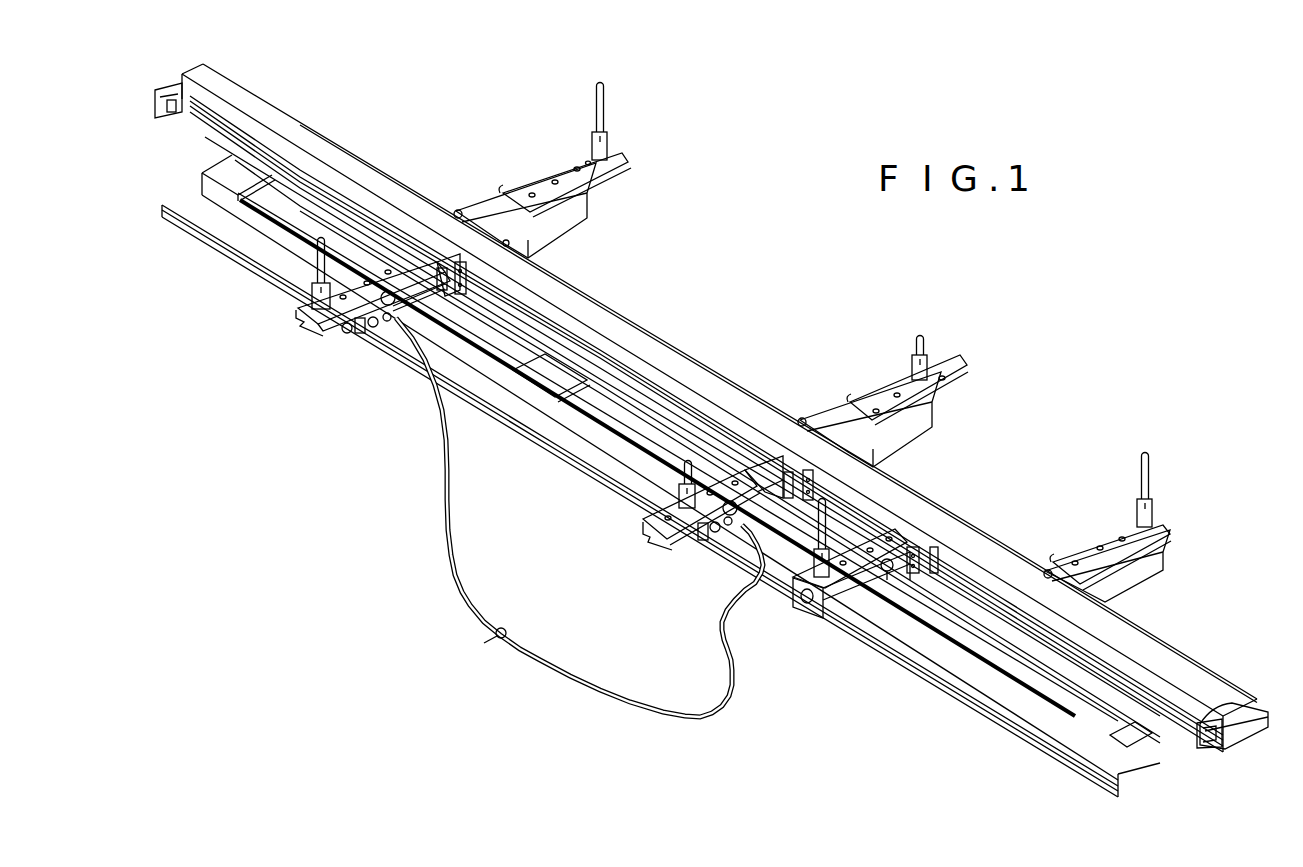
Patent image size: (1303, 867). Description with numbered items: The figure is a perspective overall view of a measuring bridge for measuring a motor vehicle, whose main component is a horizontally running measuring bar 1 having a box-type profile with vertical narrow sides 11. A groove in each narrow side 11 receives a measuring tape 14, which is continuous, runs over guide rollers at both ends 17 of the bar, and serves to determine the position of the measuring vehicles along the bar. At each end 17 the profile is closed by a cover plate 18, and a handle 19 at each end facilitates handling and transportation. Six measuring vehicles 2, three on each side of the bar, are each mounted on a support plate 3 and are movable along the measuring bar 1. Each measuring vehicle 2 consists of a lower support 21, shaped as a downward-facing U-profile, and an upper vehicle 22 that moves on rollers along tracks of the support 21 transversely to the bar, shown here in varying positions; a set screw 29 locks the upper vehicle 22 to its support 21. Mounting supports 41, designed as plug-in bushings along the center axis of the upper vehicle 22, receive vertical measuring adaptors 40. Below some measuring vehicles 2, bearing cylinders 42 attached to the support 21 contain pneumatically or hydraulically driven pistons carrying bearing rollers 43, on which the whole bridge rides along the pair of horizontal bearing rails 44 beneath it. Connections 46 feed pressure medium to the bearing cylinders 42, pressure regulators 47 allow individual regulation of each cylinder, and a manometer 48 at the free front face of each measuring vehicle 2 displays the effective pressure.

The measuring bar 1 is at (682, 364).
The measuring vehicle 2 is at (1152, 582).
The support plate 3 is at (458, 210).
The narrow side 11 is at (208, 138).
The measuring tape 14 is at (1062, 648).
The end of the measuring bar 17 is at (215, 74).
The cover plate 18 is at (1248, 708).
The handle 19 is at (163, 108).
The support 21 is at (567, 224).
The upper vehicle 22 is at (626, 160).
The set screw 29 is at (393, 320).
The measuring adaptor 40 is at (604, 100).
The mounting support 41 is at (555, 178).
The bearing cylinder 42 is at (440, 310).
The bearing roller 43 is at (414, 330).
The bearing rail 44 is at (232, 238).
The connection 46 is at (383, 326).
The pressure regulator 47 is at (370, 333).
The manometer 48 is at (332, 345).